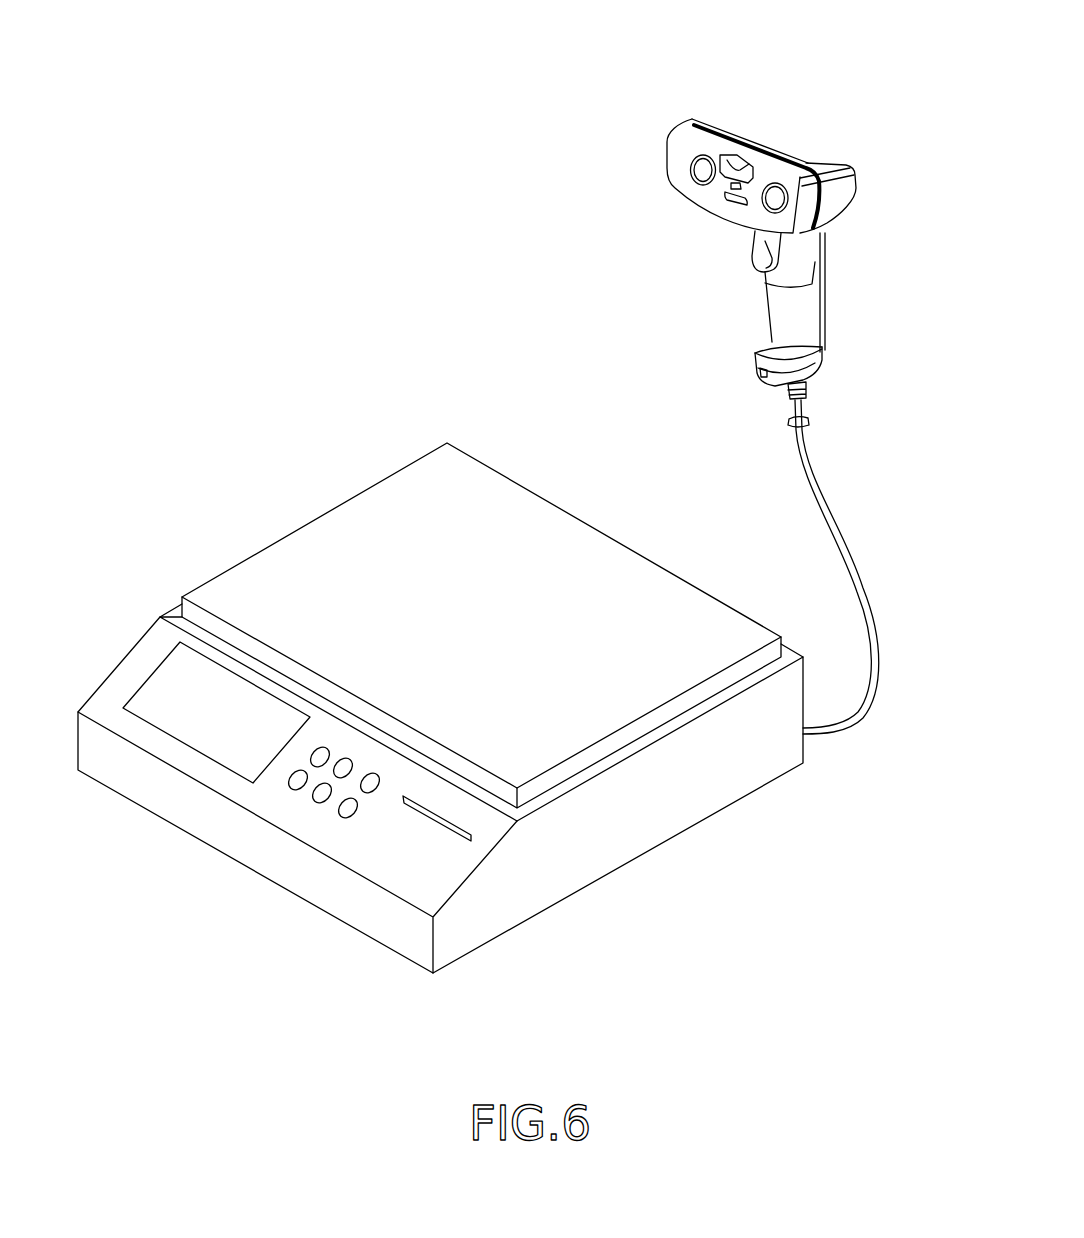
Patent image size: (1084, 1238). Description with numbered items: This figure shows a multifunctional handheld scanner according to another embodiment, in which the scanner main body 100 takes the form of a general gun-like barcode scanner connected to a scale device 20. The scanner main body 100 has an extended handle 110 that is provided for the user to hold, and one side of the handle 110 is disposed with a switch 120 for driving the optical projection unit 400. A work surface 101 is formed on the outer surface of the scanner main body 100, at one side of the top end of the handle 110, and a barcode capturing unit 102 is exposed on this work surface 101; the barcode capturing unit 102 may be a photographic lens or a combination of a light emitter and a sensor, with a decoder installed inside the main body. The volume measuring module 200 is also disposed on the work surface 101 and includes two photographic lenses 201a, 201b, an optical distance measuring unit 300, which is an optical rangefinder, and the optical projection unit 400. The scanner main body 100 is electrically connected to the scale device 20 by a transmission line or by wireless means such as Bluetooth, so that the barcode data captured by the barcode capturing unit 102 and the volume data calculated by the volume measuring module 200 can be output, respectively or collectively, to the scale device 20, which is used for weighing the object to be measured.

The scale device 20 is at (370, 533).
The scanner main body 100 is at (742, 381).
The work surface 101 is at (675, 155).
The barcode capturing unit 102 is at (738, 163).
The handle 110 is at (810, 303).
The switch 120 is at (763, 242).
The volume measuring module 200 is at (738, 156).
The photographic lens 201a is at (773, 190).
The photographic lens 201b is at (705, 170).
The optical distance measuring unit 300 is at (732, 200).
The optical projection unit 400 is at (727, 183).